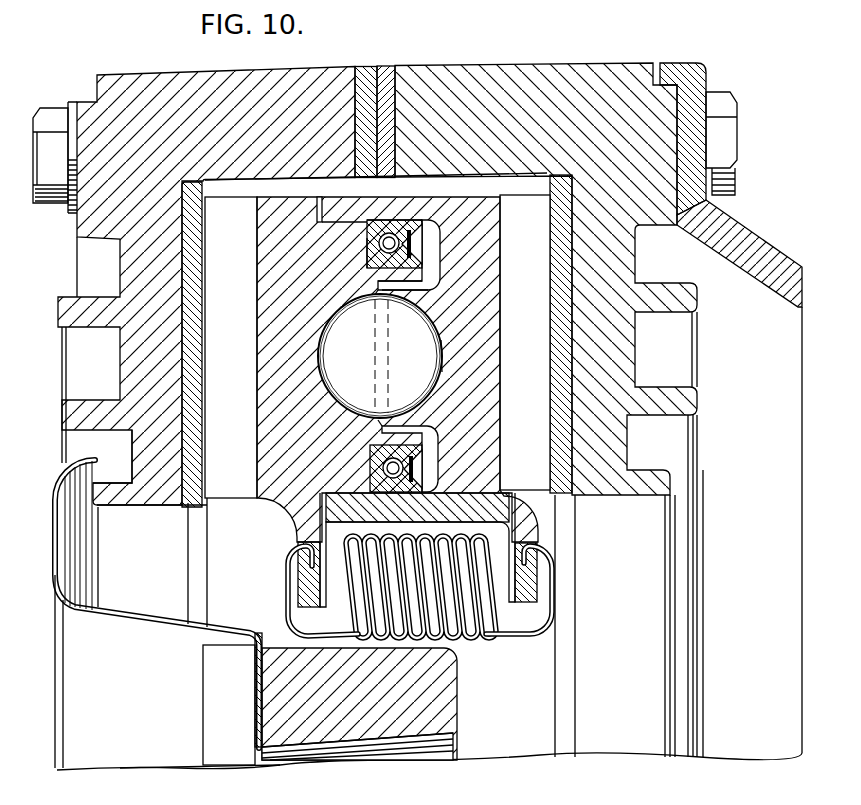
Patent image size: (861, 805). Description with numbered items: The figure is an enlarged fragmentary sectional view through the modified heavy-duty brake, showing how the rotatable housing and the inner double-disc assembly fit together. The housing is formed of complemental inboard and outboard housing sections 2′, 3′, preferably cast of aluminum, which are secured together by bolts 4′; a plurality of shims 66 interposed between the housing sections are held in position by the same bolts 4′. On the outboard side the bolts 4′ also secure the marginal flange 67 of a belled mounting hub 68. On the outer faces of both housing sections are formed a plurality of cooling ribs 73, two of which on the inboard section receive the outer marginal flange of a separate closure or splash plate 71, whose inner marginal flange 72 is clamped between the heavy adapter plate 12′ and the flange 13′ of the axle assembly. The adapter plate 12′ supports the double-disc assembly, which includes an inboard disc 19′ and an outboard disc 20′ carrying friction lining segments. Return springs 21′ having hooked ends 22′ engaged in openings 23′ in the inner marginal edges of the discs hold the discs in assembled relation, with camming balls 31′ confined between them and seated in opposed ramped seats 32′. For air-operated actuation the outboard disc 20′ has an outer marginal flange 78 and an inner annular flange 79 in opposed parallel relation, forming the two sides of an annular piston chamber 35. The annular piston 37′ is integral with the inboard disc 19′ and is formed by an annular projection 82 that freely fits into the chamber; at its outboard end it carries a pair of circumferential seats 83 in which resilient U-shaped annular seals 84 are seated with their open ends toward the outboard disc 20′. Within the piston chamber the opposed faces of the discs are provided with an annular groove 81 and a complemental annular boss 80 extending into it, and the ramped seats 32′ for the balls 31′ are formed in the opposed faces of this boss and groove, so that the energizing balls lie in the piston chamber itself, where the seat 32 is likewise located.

The inboard housing section 2′ is at (175, 73).
The outboard housing section 3′ is at (505, 65).
The shims 66 is at (378, 66).
The marginal flange 67 is at (700, 82).
The belled mounting hub 68 is at (758, 247).
The bolts 4′ is at (740, 138).
The outboard disc 20′ is at (460, 196).
The inboard disc 19′ is at (273, 203).
The annular piston 37′ is at (333, 191).
The piston chamber 35 is at (437, 243).
The annular projection 82 is at (360, 226).
The outer marginal flange 78 is at (406, 198).
The seals 84 is at (367, 240).
The circumferential seats 83 is at (367, 254).
The annular groove 81 is at (377, 290).
The annular boss 80 is at (420, 292).
The camming balls 31′ is at (365, 353).
The ball seat 32 is at (320, 362).
The ramped seats 32′ is at (440, 348).
The annular flange 79 is at (346, 522).
The openings 23′ is at (300, 553).
The return springs 21′ is at (470, 634).
The hooked ends 22′ is at (290, 586).
The cooling ribs 73 is at (68, 298).
The closure plate 71 is at (143, 624).
The inner marginal flange 72 is at (254, 692).
The adapter plate 12′ is at (457, 699).
The flange 13′ is at (218, 768).